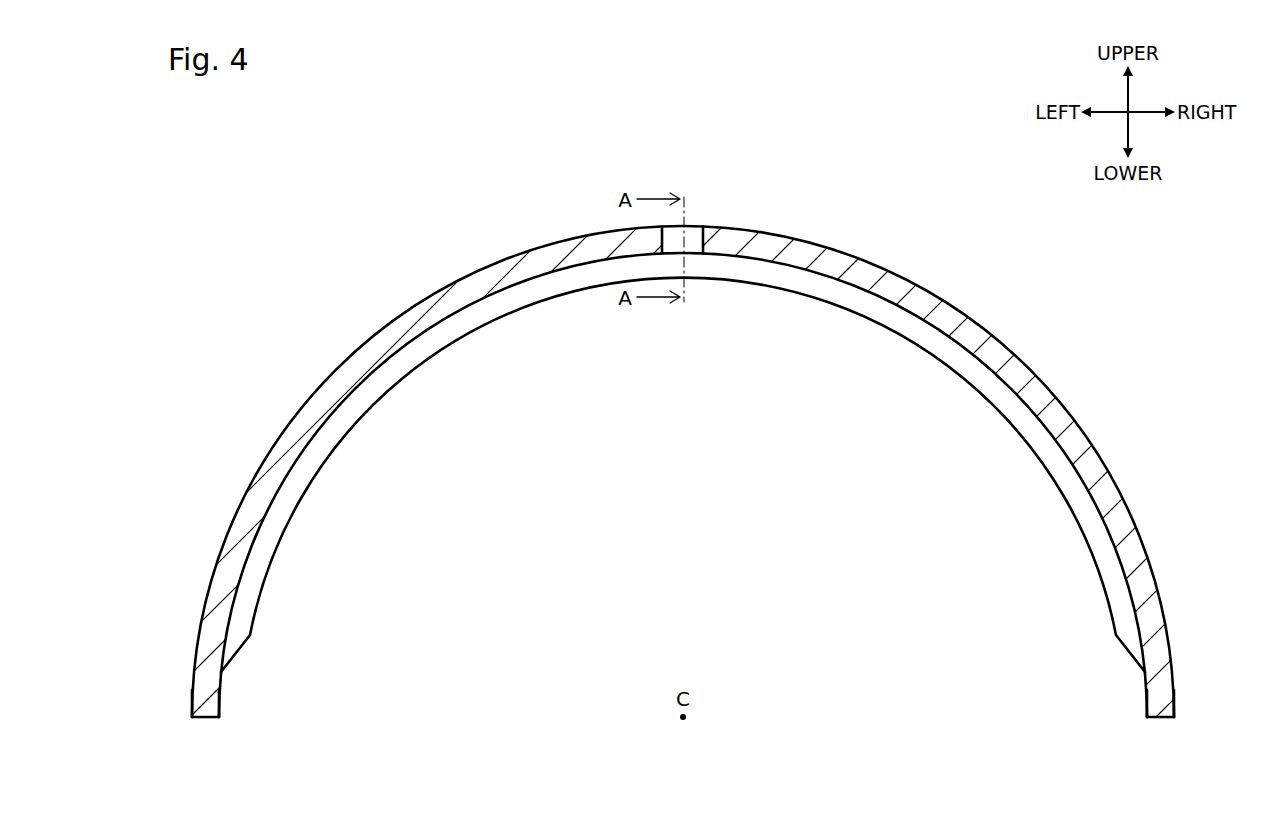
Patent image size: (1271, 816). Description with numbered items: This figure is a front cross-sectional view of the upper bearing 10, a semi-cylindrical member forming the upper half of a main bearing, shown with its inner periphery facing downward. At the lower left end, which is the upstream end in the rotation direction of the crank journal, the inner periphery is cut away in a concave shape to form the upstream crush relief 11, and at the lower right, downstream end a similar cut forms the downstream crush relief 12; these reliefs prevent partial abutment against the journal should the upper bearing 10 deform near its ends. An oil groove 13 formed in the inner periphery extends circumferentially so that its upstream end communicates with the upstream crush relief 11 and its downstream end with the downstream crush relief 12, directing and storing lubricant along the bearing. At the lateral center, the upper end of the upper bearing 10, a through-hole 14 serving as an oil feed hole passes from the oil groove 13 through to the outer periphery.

The upper bearing 10 is at (431, 256).
The upstream crush relief 11 is at (220, 688).
The downstream crush relief 12 is at (1145, 688).
The oil groove 13 is at (338, 412).
The through-hole 14 is at (693, 238).